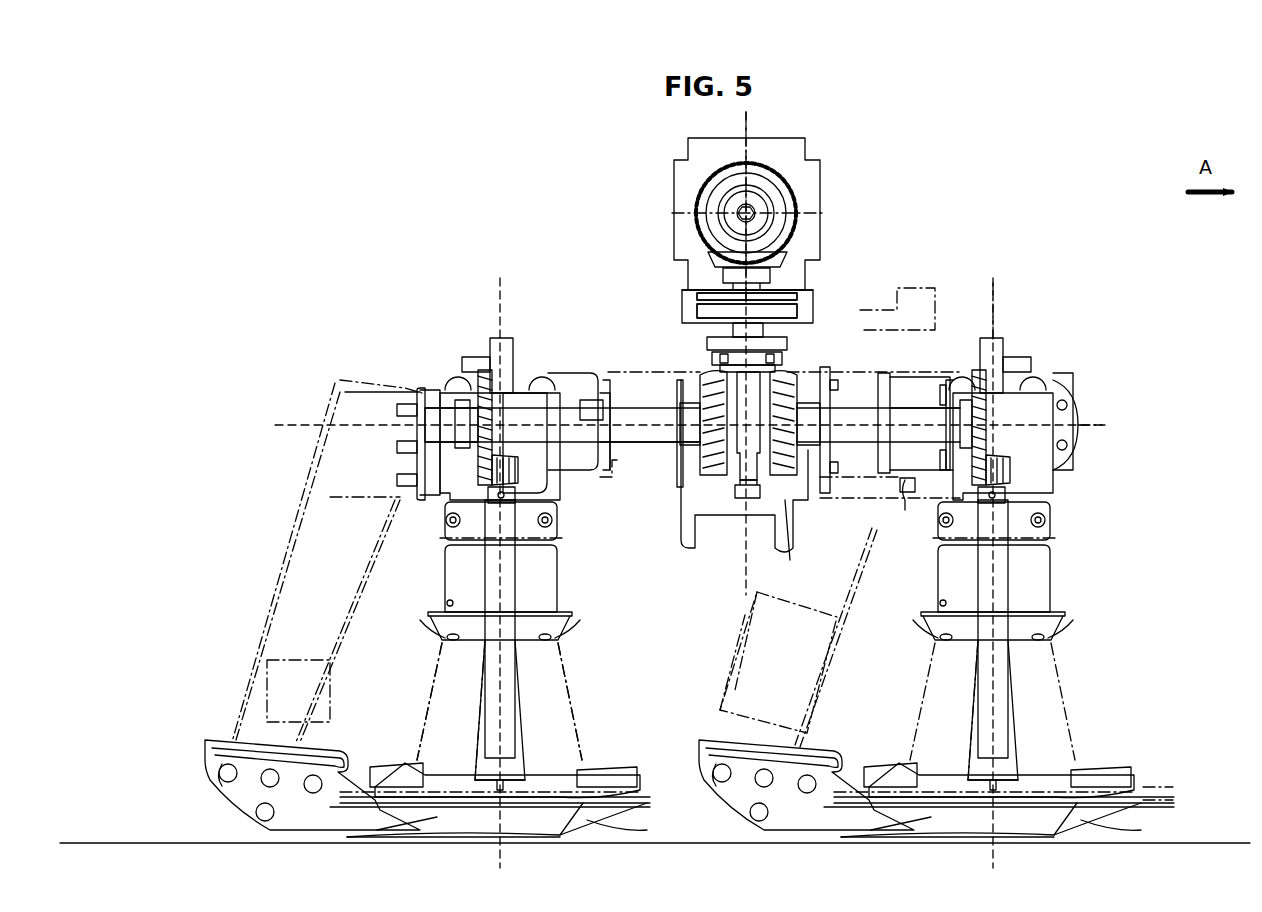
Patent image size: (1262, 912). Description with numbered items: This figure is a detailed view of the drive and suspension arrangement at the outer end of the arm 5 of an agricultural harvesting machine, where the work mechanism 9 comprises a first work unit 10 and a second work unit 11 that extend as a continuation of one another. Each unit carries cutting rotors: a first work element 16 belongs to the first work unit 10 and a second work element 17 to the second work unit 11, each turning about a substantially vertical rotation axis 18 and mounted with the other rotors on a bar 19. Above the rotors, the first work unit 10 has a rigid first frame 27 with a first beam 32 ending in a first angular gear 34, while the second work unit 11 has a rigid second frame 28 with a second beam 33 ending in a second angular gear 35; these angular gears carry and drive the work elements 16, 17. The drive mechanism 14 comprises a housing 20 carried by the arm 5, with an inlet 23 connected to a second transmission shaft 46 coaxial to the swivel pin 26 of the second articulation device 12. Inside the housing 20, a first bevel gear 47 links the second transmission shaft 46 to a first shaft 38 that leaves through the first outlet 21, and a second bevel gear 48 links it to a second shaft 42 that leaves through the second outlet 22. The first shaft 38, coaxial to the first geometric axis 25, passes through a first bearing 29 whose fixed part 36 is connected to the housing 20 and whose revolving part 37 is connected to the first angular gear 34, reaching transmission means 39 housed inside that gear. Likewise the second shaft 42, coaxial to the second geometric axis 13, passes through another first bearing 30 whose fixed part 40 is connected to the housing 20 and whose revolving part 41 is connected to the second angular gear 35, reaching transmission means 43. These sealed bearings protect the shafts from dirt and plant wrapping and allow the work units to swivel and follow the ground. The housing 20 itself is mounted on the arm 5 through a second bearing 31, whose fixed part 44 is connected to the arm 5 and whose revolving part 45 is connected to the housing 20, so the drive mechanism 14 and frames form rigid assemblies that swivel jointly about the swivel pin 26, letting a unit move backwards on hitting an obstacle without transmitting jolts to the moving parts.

The arm 5 is at (806, 152).
The work mechanism 9 is at (165, 581).
The first work unit 10 is at (1168, 683).
The second work unit 11 is at (618, 676).
The second articulation device 12 is at (970, 322).
The second geometric axis 13 is at (298, 423).
The drive mechanism 14 is at (718, 560).
The first work element 16 is at (1053, 747).
The second work element 17 is at (563, 750).
The rotation axis 18 is at (503, 590).
The bar 19 is at (590, 815).
The housing 20 is at (787, 540).
The first outlet 21 is at (806, 415).
The second outlet 22 is at (688, 415).
The inlet 23 is at (715, 338).
The first geometric axis 25 is at (1093, 418).
The swivel pin 26 is at (745, 130).
The first frame 27 is at (842, 659).
The second frame 28 is at (358, 638).
The first bearing 29 is at (886, 368).
The other first bearing 30 is at (602, 357).
The second bearing 31 is at (808, 292).
The first beam 32 is at (893, 530).
The second beam 33 is at (403, 497).
The first angular gear 34 is at (1048, 364).
The second angular gear 35 is at (457, 354).
The fixed part of the first bearing 36 is at (888, 371).
The revolving part of the first bearing 37 is at (898, 377).
The first shaft 38 is at (895, 416).
The transmission means 39 is at (994, 442).
The fixed part of the other first bearing 40 is at (613, 473).
The revolving part of the other first bearing 41 is at (607, 480).
The second shaft 42 is at (622, 433).
The transmission means 43 is at (463, 465).
The fixed part of the second bearing 44 is at (788, 288).
The revolving part of the second bearing 45 is at (808, 291).
The second transmission shaft 46 is at (740, 278).
The first bevel gear 47 is at (790, 370).
The second bevel gear 48 is at (700, 370).